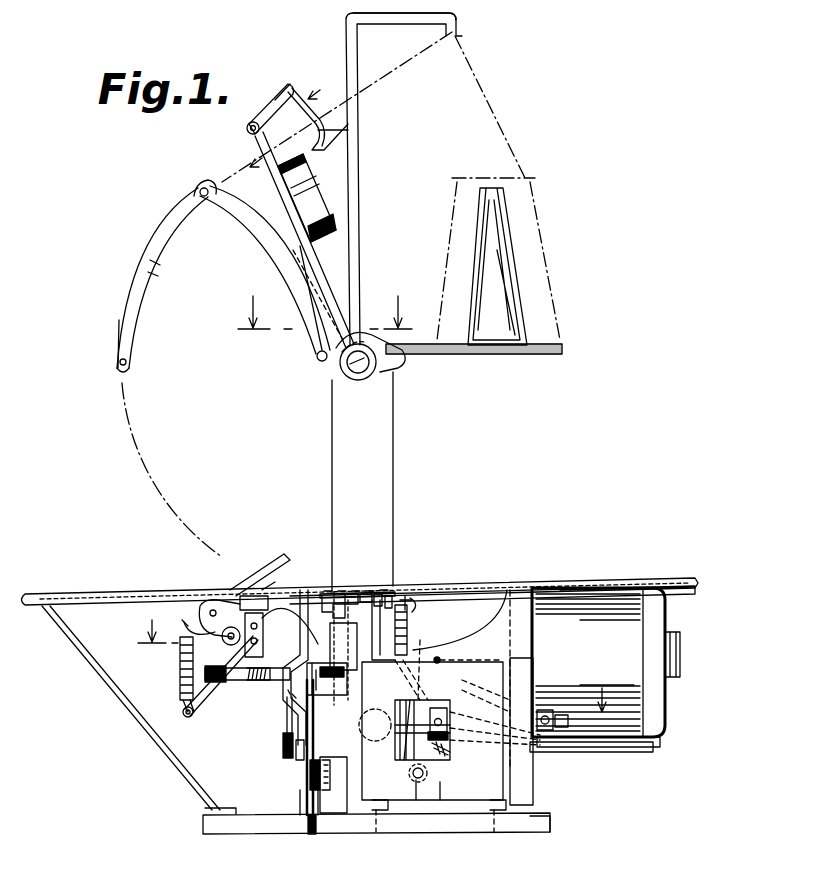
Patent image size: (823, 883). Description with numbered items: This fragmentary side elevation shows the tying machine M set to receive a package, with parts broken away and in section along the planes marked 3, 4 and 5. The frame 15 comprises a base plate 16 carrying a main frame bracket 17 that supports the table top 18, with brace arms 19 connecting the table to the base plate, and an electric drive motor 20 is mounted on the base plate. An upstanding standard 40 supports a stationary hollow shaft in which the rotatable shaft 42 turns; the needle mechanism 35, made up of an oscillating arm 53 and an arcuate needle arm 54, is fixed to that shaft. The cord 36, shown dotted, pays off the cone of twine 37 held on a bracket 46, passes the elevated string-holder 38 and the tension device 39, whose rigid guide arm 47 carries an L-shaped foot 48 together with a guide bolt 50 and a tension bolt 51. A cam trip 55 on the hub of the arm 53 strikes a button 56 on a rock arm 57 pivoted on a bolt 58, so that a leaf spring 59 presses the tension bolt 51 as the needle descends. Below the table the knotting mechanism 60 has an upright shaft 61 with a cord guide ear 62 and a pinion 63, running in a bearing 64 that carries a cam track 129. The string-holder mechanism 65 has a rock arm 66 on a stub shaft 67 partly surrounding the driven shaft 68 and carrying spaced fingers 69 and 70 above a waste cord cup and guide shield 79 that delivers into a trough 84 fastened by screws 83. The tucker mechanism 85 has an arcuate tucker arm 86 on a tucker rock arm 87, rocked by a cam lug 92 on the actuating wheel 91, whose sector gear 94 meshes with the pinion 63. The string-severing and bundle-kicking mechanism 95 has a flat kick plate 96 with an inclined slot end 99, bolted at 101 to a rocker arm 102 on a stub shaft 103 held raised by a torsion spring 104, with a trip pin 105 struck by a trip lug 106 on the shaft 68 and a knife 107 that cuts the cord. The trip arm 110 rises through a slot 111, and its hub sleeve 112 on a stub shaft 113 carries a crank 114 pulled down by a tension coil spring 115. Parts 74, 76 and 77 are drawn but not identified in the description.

The section line 3- 3 is at (324, 318).
The section line 4- 4 is at (274, 126).
The section line 5- 5 is at (386, 666).
The frame 15 is at (560, 810).
The base plate 16 is at (280, 822).
The main frame bracket 17 is at (442, 784).
The table top 18 is at (605, 580).
The brace arms 19 is at (152, 752).
The electric drive motor 20 is at (605, 670).
The needle mechanism 35 is at (120, 322).
The cord 36 is at (150, 446).
The cone or ball of twine 37 is at (510, 302).
The elevated string-holder 38 is at (462, 20).
The string tension device 39 is at (285, 92).
The upstanding standard 40 is at (392, 424).
The rotatable shaft 42 is at (352, 366).
The bracket 46 is at (432, 360).
The rigid guide arm 47 is at (330, 192).
The L-shaped foot 48 is at (260, 114).
The guide bolt 50 is at (300, 122).
The tension bolt 51 is at (246, 128).
The oscillating arm 53 is at (252, 222).
The arcuate needle arm 54 is at (134, 328).
The cam trip 55 is at (370, 334).
The button 56 is at (318, 360).
The rock arm 57 is at (308, 330).
The bolt 58 is at (350, 232).
The leaf spring 59 is at (352, 126).
The knotting mechanism 60 is at (365, 592).
The upright rotatable shaft 61 is at (386, 594).
The cord guide ear 62 is at (376, 592).
The pinion 63 is at (327, 690).
The bearing 64 is at (447, 711).
The string-holder mechanism 65 is at (418, 594).
The rock arm 66 is at (430, 760).
The stub shaft 67 is at (416, 782).
The driven shaft 68 is at (566, 748).
The finger 69 is at (408, 624).
The finger 70 is at (381, 630).
The rod 74 is at (408, 742).
The slide block 76 is at (428, 702).
The spring 77 is at (450, 750).
The waste cord-receiving cup and guide shield 79 is at (430, 650).
The screws 83 is at (440, 660).
The downwardly inclined trough 84 is at (449, 692).
The tucker mechanism 85 is at (320, 592).
The arcuate tucker arm 86 is at (290, 667).
The tucker rock arm 87 is at (258, 663).
The actuating wheel 91 is at (302, 790).
The cam lug 92 is at (312, 830).
The arcuate sector gear 94 is at (333, 787).
The string-severing and bundle-kicking mechanism 95 is at (340, 592).
The flat kick plate 96 is at (350, 592).
The inclined end 99 is at (327, 776).
The bolt 101 is at (335, 648).
The kick plate rocker arm 102 is at (284, 710).
The stub shaft 103 is at (244, 654).
The torsion spring 104 is at (275, 670).
The trip pin 105 is at (288, 740).
The trip lug 106 is at (304, 770).
The sharp knife 107 is at (408, 596).
The trip arm 110 is at (258, 574).
The slot 111 is at (279, 577).
The hub sleeve 112 is at (230, 628).
The stub shaft 113 is at (249, 626).
The crank 114 is at (190, 622).
The tension coil spring 115 is at (180, 672).
The cam track 129 is at (335, 598).
The tying machine M is at (681, 583).